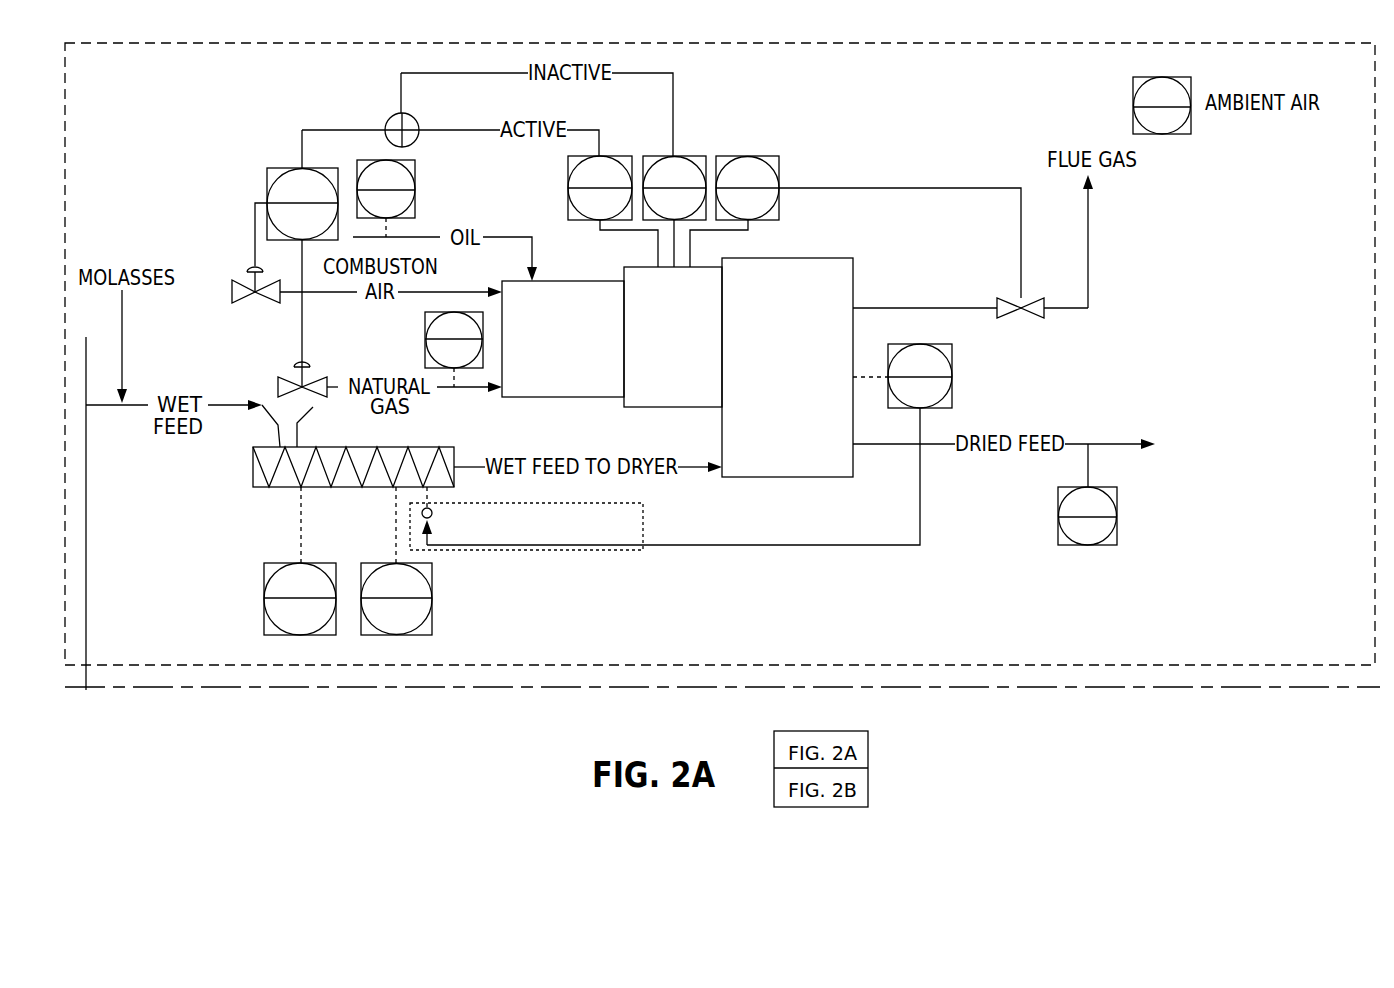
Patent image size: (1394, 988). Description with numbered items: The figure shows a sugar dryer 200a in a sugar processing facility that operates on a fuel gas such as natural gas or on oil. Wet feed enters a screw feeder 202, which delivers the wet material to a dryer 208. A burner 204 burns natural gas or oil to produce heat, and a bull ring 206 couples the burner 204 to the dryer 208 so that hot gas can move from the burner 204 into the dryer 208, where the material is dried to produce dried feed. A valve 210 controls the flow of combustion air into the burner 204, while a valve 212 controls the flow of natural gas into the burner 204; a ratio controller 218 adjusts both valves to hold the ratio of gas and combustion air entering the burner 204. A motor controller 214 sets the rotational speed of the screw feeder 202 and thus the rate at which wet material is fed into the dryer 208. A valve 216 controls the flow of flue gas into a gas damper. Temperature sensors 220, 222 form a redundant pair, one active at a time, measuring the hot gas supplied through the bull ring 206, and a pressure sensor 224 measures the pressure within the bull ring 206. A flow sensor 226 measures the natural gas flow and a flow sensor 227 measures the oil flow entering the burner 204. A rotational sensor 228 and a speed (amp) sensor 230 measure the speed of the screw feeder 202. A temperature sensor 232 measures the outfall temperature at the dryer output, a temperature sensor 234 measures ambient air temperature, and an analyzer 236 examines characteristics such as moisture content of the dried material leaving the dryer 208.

The sugar dryer 200a is at (1375, 645).
The screw feeder 202 is at (440, 447).
The burner 204 is at (545, 391).
The bull ring 206 is at (668, 400).
The dryer 208 is at (768, 467).
The valve 210 is at (232, 296).
The valve 212 is at (278, 382).
The motor controller 214 is at (647, 523).
The valve 216 is at (997, 300).
The ratio controller 218 is at (277, 167).
The temperature sensor 220 is at (566, 190).
The temperature sensor 222 is at (693, 156).
The pressure sensor 224 is at (759, 156).
The flow sensor 226 is at (425, 337).
The flow sensor 227 is at (416, 190).
The rotational sensor 228 is at (264, 598).
The speed (amp) sensor 230 is at (433, 598).
The temperature sensor 232 is at (953, 392).
The temperature sensor 234 is at (1133, 116).
The analyzer 236 is at (1118, 517).